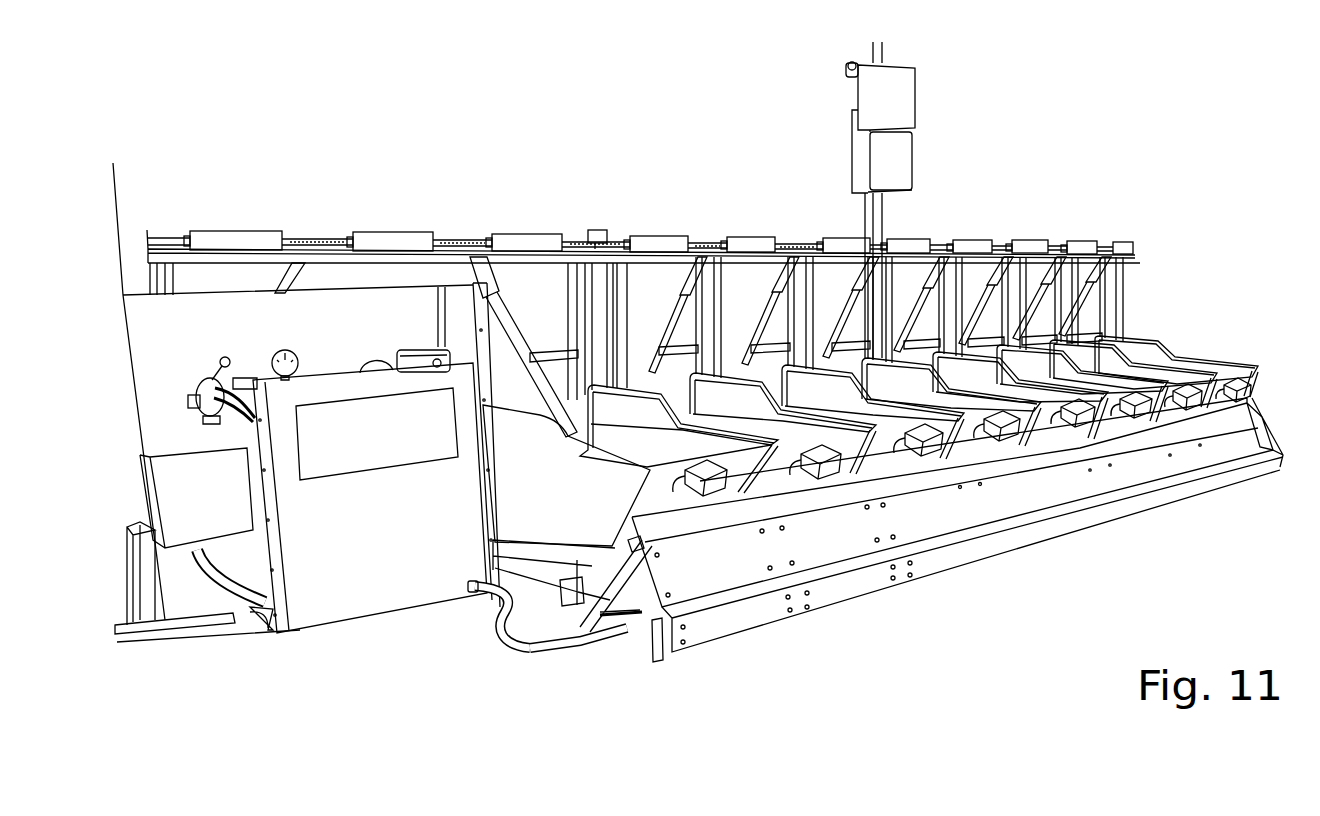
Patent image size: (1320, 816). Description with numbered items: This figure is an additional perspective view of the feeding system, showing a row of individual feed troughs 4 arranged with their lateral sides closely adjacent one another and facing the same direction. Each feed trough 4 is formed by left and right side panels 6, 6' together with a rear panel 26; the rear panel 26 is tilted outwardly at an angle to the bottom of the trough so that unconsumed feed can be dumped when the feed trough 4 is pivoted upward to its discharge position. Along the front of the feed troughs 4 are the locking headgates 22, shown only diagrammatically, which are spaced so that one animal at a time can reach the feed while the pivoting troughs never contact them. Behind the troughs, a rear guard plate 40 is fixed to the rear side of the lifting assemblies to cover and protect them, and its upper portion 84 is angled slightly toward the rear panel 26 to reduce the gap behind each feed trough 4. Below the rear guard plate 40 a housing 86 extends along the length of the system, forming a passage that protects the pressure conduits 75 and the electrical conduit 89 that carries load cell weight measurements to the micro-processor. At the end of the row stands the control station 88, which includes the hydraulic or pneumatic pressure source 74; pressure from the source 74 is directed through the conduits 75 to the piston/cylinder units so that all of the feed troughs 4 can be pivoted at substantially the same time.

The feed trough 4 is at (1227, 317).
The side panel 6 is at (566, 475).
The side panel 6' is at (679, 426).
The locking headgate 22 is at (672, 260).
The rear panel 26 is at (655, 492).
The rear guard plate 40 is at (832, 538).
The pressure source 74 is at (387, 322).
The pressure conduit 75 is at (493, 633).
The upper portion of the rear guard plate 84 is at (912, 475).
The housing 86 is at (755, 614).
The control station 88 is at (322, 329).
The electrical conduit 89 is at (527, 652).